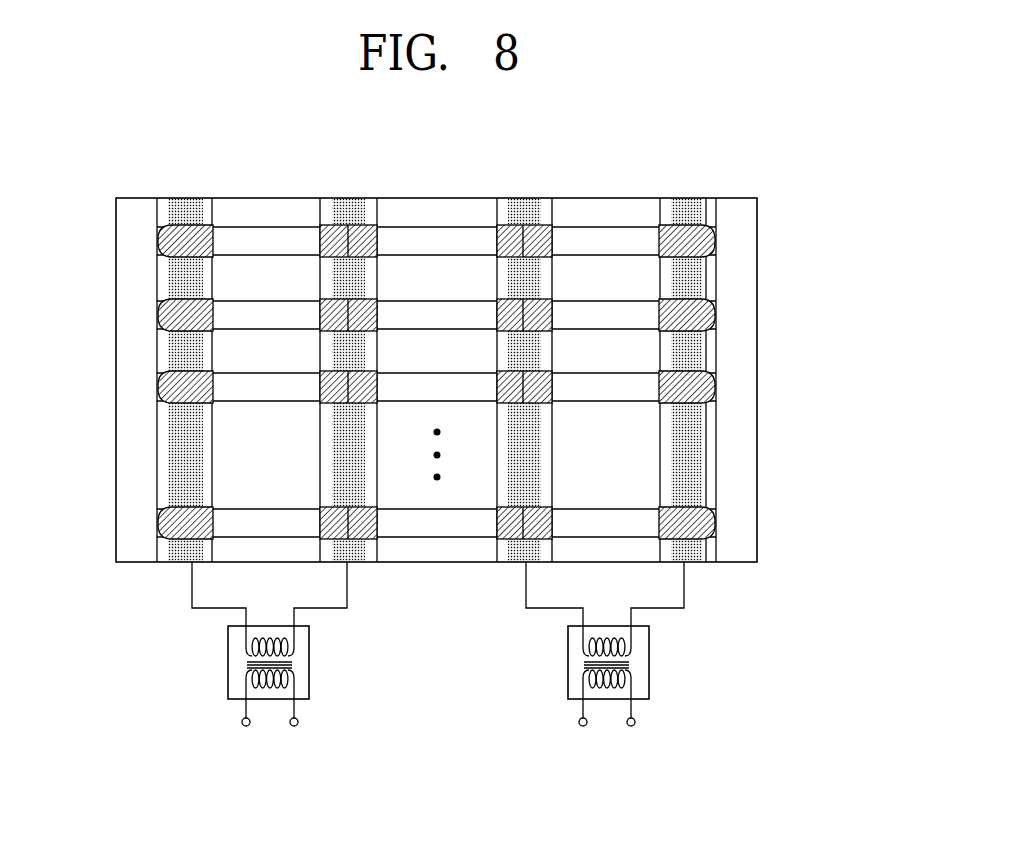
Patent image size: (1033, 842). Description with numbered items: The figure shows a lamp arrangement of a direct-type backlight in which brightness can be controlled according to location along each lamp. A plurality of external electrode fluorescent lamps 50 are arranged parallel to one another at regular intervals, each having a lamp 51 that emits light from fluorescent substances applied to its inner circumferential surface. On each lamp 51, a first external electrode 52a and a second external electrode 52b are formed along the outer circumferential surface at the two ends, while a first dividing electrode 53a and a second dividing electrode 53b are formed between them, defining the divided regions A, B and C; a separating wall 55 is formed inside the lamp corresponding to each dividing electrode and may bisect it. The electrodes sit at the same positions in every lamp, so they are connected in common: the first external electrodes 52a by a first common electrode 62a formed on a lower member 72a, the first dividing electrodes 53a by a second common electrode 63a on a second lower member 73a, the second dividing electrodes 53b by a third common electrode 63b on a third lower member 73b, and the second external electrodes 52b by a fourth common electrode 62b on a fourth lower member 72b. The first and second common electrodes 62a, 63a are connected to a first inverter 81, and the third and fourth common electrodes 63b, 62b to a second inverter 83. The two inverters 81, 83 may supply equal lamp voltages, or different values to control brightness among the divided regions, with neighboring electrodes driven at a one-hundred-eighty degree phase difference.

The external electrode fluorescent lamp 50 is at (717, 228).
The lamp 51 is at (448, 234).
The first external electrode 52a is at (204, 228).
The second external electrode 52b is at (699, 228).
The first dividing electrode 53a is at (372, 228).
The second dividing electrode 53b is at (548, 228).
The separating wall 55 is at (346, 238).
The first common electrode 62a is at (181, 205).
The fourth common electrode 62b is at (684, 206).
The second common electrode 63a is at (347, 206).
The third common electrode 63b is at (523, 206).
The lower member 72a is at (165, 441).
The fourth lower member 72b is at (712, 437).
The second lower member 73a is at (330, 440).
The third lower member 73b is at (547, 440).
The first inverter 81 is at (309, 663).
The second inverter 83 is at (649, 663).